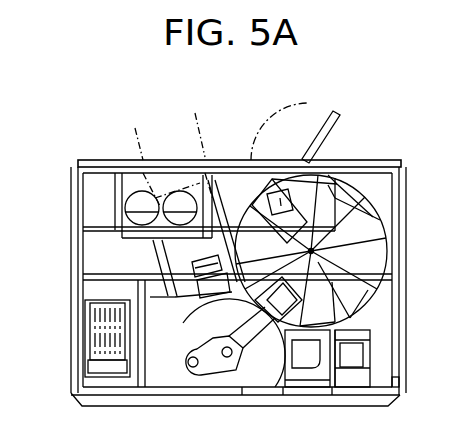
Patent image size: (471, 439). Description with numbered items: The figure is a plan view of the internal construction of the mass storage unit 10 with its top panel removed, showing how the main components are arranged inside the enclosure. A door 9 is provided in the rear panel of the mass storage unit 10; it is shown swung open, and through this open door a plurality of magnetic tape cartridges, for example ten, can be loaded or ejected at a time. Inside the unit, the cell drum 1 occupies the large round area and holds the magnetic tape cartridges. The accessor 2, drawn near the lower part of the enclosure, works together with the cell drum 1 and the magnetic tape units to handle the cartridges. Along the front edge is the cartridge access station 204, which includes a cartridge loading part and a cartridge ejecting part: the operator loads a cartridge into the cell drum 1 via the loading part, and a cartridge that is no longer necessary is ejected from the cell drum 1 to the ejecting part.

The mass storage unit 10 is at (86, 156).
The door 9 is at (329, 122).
The cell drum 1 is at (396, 205).
The accessor 2 is at (172, 364).
The cartridge access station 204 is at (320, 378).